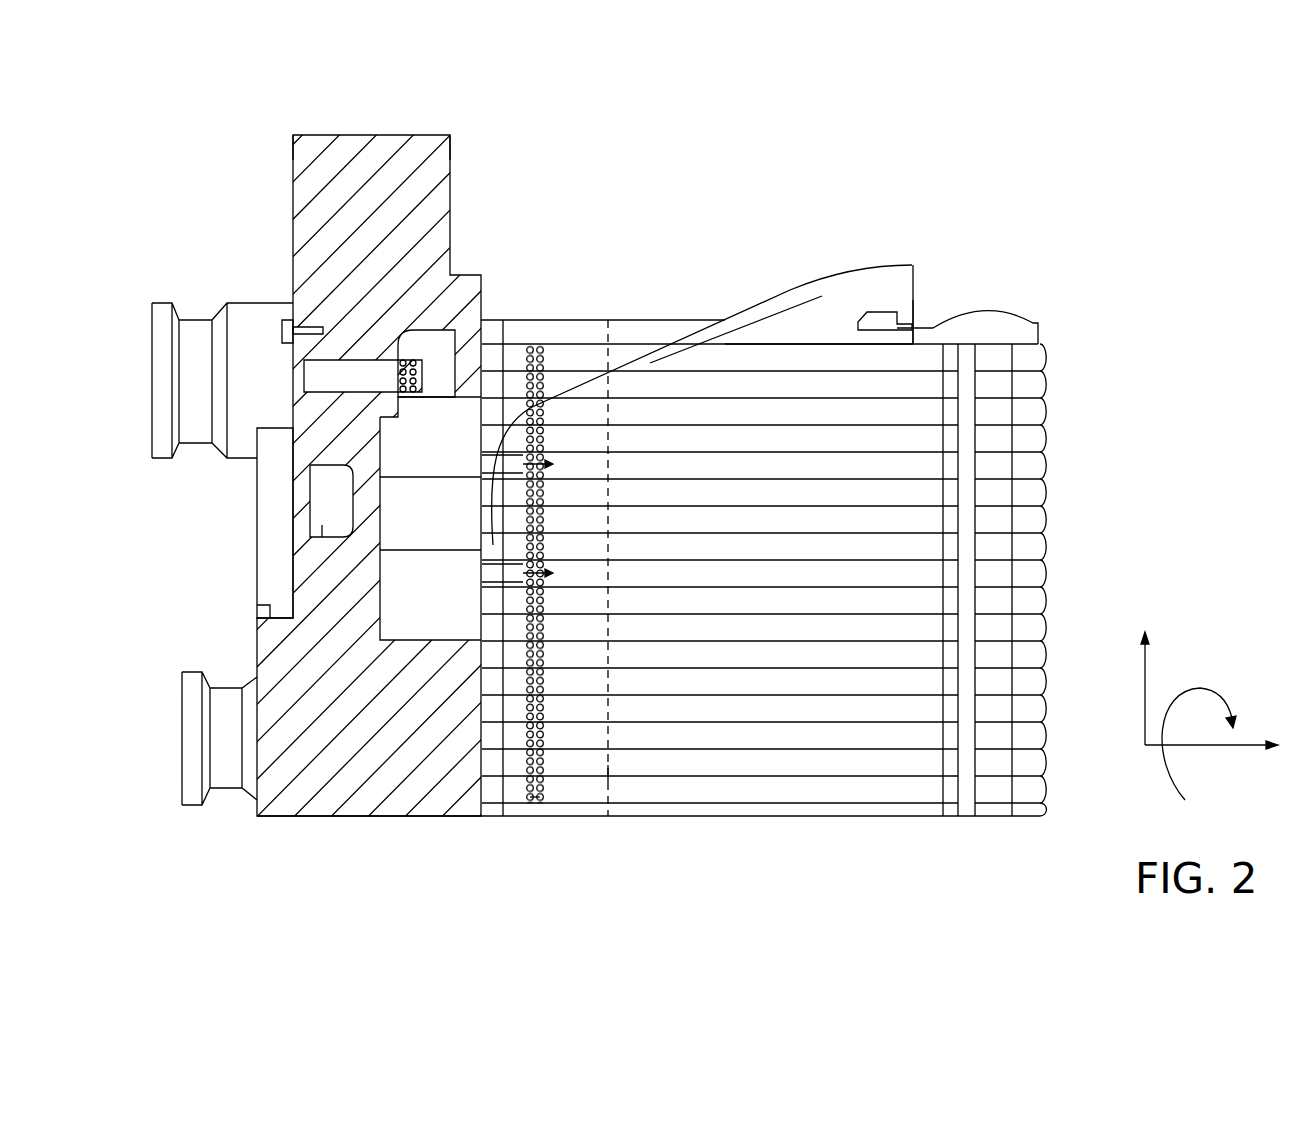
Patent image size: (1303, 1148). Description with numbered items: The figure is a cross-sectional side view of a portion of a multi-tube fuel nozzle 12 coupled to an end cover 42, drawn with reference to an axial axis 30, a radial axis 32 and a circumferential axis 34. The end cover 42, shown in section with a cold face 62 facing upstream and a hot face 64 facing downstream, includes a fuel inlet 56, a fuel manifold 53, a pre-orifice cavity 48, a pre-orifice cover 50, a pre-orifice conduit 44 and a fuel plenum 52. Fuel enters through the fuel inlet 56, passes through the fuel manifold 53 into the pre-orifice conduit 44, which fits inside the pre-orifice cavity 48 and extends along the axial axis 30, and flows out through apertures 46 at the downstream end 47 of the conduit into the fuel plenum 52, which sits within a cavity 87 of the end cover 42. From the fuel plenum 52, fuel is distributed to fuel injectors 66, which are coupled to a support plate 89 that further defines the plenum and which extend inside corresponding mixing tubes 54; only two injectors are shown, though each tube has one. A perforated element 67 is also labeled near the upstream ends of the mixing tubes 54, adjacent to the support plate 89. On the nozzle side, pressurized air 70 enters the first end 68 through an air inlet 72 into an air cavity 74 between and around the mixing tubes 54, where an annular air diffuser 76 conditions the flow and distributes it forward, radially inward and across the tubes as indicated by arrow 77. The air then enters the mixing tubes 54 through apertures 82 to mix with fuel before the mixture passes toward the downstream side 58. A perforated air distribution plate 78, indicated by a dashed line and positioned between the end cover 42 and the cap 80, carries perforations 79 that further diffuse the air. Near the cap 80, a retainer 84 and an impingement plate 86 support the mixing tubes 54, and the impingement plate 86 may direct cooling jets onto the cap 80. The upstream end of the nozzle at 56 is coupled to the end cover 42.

The multi-tube fuel nozzle 12 is at (781, 150).
The axial axis 30 is at (1203, 747).
The radial axis 32 is at (1145, 693).
The circumferential axis 34 is at (1170, 768).
The end cover 42 is at (378, 120).
The pre-orifice conduit 44 is at (333, 377).
The apertures 46 is at (387, 358).
The downstream end 47 is at (360, 380).
The pre-orifice cavity 48 is at (313, 463).
The pre-orifice cover 50 is at (290, 400).
The fuel plenum 52 is at (397, 623).
The fuel manifold 53 is at (322, 528).
The mixing tubes 54 is at (643, 357).
The fuel inlet 56 is at (163, 368).
The downstream side 58 is at (1004, 296).
The cold face 62 is at (292, 158).
The hot face 64 is at (454, 162).
The fuel injectors 66 is at (675, 318).
The perforated plate 67 is at (537, 348).
The first end 68 is at (954, 238).
The pressurized air 70 is at (895, 318).
The air inlet 72 is at (915, 288).
The air cavity 74 is at (818, 338).
The air diffuser 76 is at (800, 265).
The arrow 77 is at (757, 310).
The perforated air distribution plate 78 is at (610, 705).
The perforations 79 is at (608, 780).
The cap 80 is at (1015, 360).
The apertures 82 is at (540, 760).
The retainer 84 is at (951, 357).
The impingement plate 86 is at (968, 357).
The cavity 87 is at (410, 362).
The support plate 89 is at (483, 320).